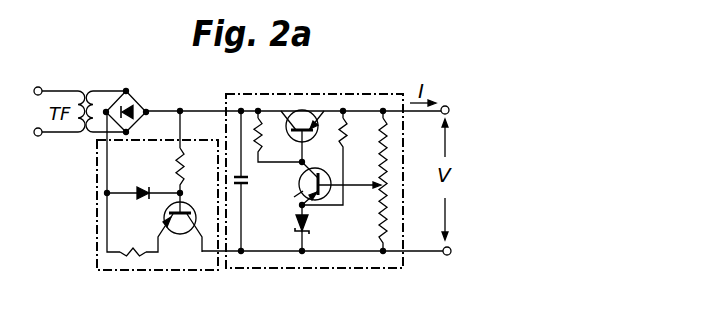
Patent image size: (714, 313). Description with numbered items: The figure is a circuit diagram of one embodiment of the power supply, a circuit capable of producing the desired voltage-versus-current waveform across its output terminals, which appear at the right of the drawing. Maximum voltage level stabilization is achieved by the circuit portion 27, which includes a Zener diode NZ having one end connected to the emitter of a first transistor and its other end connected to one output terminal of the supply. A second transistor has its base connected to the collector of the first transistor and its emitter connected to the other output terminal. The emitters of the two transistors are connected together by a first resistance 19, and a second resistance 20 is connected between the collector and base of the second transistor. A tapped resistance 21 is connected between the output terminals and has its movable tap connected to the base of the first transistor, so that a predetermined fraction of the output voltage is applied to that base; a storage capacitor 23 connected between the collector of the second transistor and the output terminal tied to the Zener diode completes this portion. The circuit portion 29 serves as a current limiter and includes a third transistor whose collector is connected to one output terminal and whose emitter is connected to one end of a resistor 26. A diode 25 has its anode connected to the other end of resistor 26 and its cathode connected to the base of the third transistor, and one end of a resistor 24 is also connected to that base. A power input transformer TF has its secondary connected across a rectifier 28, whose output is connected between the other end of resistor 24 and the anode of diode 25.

The first resistance 19 is at (347, 133).
The second resistance 20 is at (259, 136).
The tapped resistance 21 is at (379, 151).
The capacitor 23 is at (248, 182).
The resistor 24 is at (183, 166).
The diode 25 is at (146, 187).
The resistor 26 is at (131, 246).
The circuit portion 27 is at (314, 199).
The rectifier 28 is at (134, 99).
The circuit portion 29 is at (157, 208).